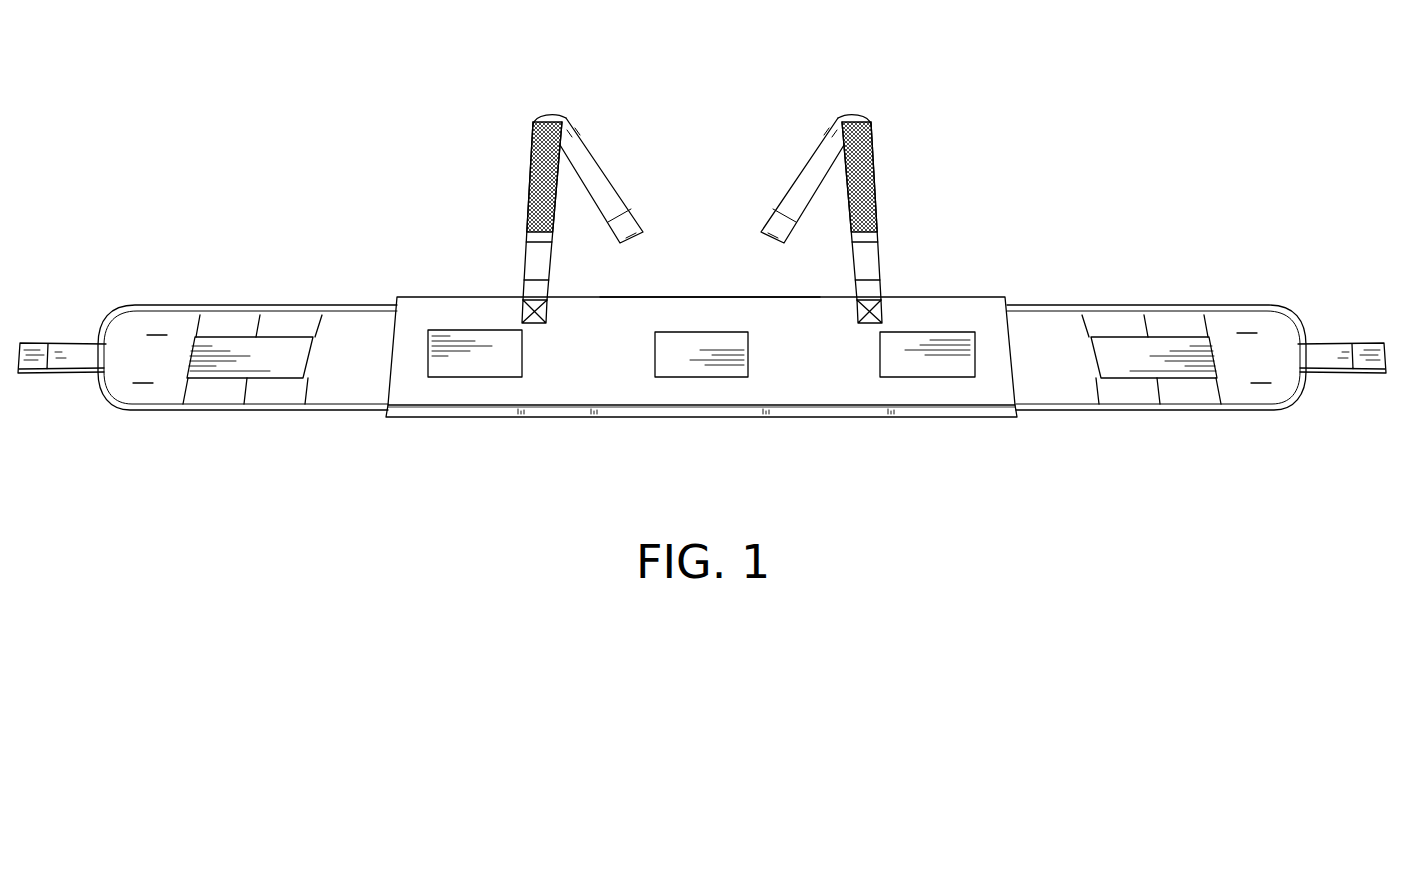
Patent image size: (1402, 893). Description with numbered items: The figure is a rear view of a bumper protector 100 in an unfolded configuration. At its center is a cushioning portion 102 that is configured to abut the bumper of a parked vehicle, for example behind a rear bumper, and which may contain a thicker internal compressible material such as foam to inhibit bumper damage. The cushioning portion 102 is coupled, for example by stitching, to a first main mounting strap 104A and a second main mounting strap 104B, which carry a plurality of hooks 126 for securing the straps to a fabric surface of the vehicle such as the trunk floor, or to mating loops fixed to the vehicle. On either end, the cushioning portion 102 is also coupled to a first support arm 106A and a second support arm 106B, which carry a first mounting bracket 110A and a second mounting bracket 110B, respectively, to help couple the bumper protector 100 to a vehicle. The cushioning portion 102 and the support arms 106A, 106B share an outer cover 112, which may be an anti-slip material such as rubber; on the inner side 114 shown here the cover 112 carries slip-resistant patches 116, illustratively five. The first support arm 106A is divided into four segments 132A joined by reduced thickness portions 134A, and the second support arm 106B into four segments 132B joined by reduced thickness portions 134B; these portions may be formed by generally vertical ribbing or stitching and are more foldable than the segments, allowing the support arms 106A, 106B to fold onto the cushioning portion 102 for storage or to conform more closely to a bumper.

The bumper protector 100 is at (338, 167).
The cushioning portion 102 is at (663, 297).
The first main mounting strap 104A is at (872, 193).
The second main mounting strap 104B is at (530, 193).
The first support arm 106A is at (1125, 305).
The second support arm 106B is at (227, 303).
The first mounting bracket 110A is at (1335, 343).
The second mounting bracket 110B is at (70, 342).
The cover 112 is at (720, 297).
The inner side 114 is at (797, 338).
The patches 116 is at (260, 380).
The hooks 126 is at (557, 205).
The segments 132A is at (1058, 328).
The segments 132B is at (152, 322).
The reduced thickness portions 134A is at (1152, 400).
The reduced thickness portions 134B is at (180, 397).